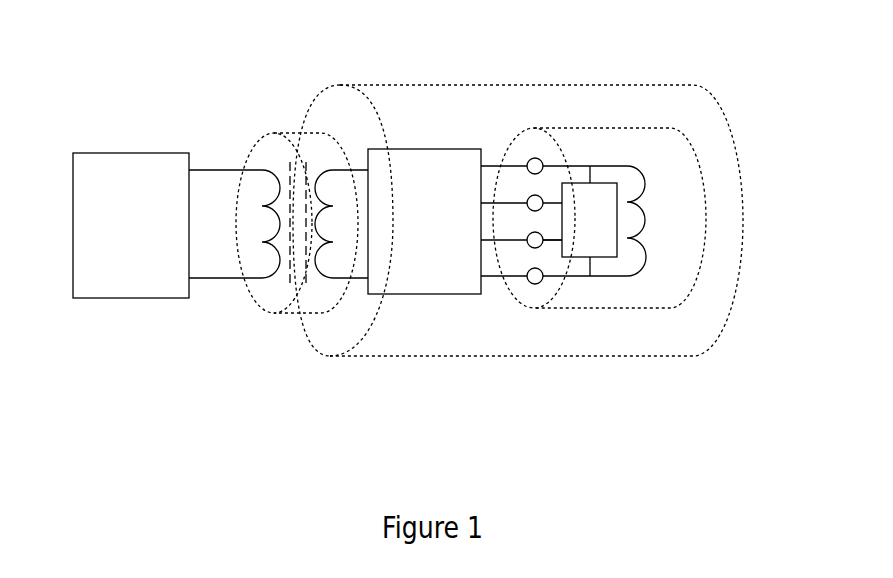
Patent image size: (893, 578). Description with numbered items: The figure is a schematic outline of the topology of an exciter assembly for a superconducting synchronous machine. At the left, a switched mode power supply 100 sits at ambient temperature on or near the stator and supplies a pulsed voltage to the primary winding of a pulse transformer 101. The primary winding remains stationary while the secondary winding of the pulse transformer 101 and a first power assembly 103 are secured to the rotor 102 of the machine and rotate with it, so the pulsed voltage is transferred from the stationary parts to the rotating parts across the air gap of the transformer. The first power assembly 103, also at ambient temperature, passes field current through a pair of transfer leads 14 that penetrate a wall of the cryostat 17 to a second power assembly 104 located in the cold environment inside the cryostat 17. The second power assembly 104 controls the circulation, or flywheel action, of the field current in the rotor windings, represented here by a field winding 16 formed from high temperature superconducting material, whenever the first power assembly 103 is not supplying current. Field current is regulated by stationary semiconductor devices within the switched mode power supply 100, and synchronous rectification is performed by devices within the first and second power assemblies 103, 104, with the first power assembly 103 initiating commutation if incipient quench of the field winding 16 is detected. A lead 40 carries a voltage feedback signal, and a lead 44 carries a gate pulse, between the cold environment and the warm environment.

The switched mode power supply 100 is at (124, 133).
The pulse transformer 101 is at (271, 112).
The rotor 102 is at (431, 71).
The first power assembly 103 is at (425, 317).
The lead 40 is at (554, 172).
The cryostat 17 is at (608, 108).
The transfer leads 14 is at (524, 199).
The lead 44 is at (556, 265).
The second power assembly 104 is at (608, 279).
The field winding 16 is at (665, 266).